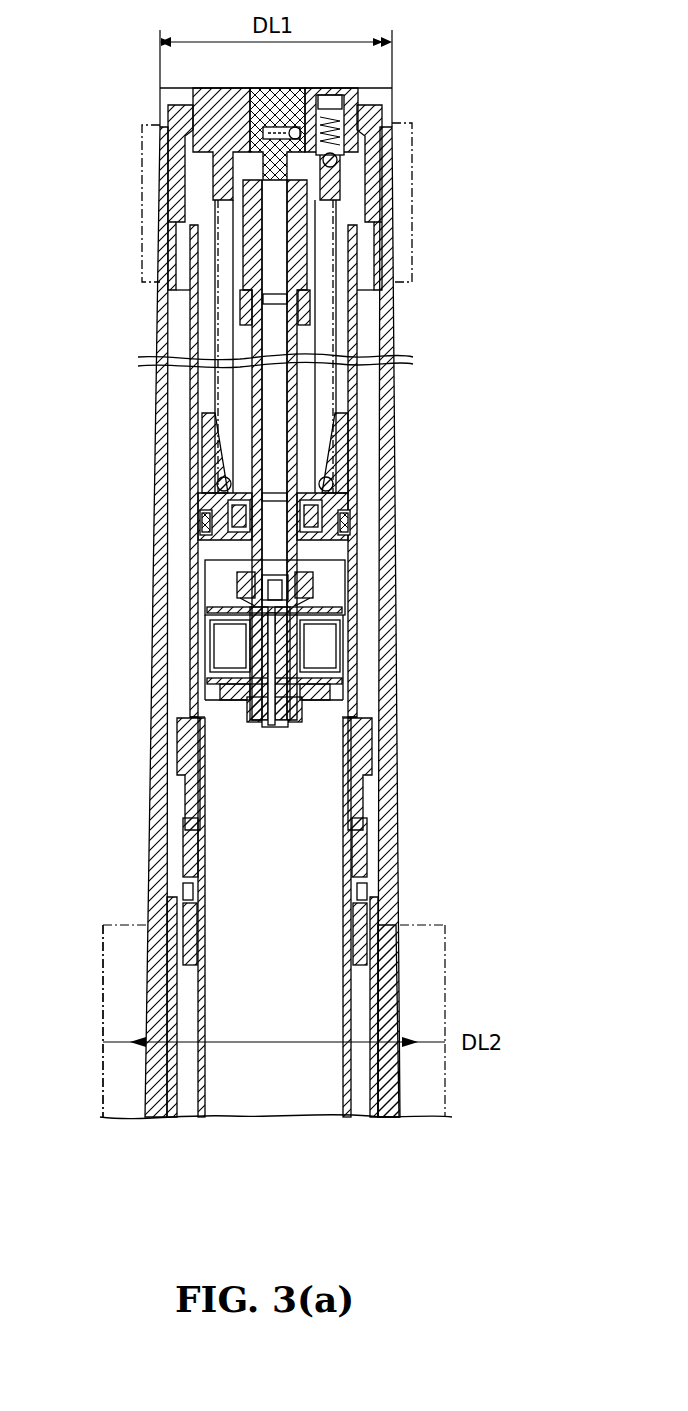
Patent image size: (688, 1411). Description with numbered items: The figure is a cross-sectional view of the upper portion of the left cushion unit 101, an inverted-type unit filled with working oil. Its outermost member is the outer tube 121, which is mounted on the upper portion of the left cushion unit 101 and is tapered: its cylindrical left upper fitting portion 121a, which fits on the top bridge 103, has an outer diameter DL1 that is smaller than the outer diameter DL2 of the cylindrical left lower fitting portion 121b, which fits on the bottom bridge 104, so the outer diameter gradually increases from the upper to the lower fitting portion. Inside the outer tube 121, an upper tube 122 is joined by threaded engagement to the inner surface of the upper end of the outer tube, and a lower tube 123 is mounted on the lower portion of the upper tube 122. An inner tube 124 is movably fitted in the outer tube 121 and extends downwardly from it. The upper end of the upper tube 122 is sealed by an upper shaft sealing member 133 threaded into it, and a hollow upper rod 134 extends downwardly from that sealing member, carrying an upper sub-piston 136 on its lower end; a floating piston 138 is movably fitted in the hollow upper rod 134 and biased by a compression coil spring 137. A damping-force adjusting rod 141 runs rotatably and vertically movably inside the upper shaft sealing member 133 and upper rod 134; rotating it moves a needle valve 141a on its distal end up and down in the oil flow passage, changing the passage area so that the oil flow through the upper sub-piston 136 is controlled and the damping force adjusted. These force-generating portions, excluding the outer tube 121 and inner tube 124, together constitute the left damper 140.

The left cushion unit 101 is at (133, 97).
The top bridge 103 is at (140, 178).
The bottom bridge 104 is at (93, 955).
The outer tube 121 is at (155, 410).
The left upper fitting portion 121a is at (393, 180).
The left lower fitting portion 121b is at (403, 1072).
The upper tube 122 is at (363, 313).
The lower tube 123 is at (207, 1087).
The inner tube 124 is at (172, 1083).
The upper shaft sealing member 133 is at (357, 93).
The hollow upper rod 134 is at (300, 398).
The upper sub-piston 136 is at (333, 606).
The compression coil spring 137 is at (333, 460).
The floating piston 138 is at (352, 495).
The left damper 140 is at (226, 585).
The damping-force adjusting rod 141 is at (277, 240).
The needle valve 141a is at (305, 563).